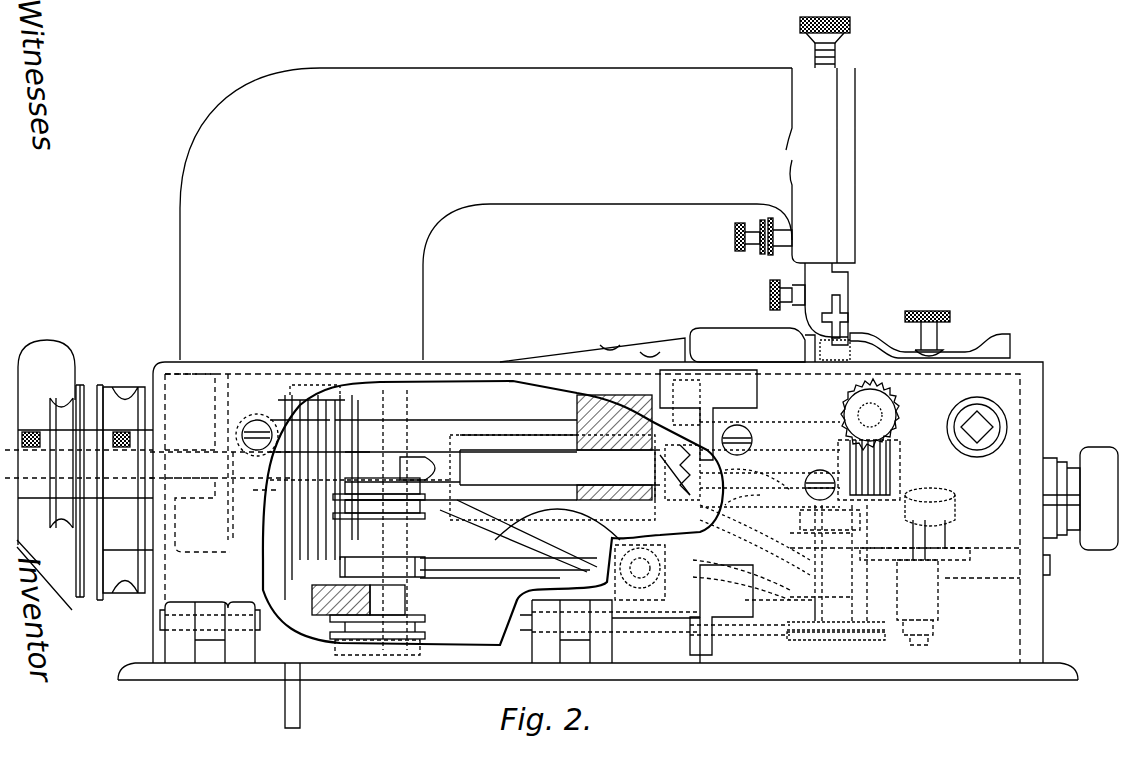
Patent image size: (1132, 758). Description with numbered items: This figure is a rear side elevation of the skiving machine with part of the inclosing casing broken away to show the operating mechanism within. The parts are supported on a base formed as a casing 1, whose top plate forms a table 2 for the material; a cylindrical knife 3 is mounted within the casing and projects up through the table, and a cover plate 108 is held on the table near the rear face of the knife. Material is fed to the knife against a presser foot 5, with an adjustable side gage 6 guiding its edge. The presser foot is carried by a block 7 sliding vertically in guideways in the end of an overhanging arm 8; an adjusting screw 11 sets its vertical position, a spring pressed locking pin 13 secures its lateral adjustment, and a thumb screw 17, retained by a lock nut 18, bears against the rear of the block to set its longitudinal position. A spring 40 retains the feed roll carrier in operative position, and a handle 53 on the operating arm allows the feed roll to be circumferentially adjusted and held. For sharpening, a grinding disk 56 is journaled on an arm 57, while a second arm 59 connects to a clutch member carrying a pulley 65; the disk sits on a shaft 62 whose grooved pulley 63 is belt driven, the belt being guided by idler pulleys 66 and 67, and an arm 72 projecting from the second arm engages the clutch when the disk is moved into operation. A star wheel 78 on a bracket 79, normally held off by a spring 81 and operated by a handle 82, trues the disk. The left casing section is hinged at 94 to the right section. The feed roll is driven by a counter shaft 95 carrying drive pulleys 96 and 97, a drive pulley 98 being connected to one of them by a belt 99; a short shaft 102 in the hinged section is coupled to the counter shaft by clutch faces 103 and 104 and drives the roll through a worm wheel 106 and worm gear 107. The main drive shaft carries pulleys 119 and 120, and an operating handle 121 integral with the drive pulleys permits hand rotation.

The casing 1 is at (455, 370).
The table 2 is at (655, 360).
The cylindrical knife 3 is at (790, 345).
The presser foot 5 is at (846, 325).
The adjustable side gage 6 is at (880, 340).
The block 7 is at (842, 286).
The overhanging arm 8 is at (660, 70).
The adjusting screw 11 is at (840, 64).
The spring pressed locking pin 13 is at (768, 294).
The thumb screw 17 is at (738, 250).
The lock nut 18 is at (758, 226).
The spring 40 is at (640, 580).
The handle 53 is at (1098, 458).
The grinding disk 56 is at (765, 495).
The arm 57 is at (468, 428).
The second arm 59 is at (408, 458).
The shaft 62 is at (812, 632).
The grooved pulley 63 is at (870, 640).
The pulley 65 is at (325, 395).
The idler pulley 66 is at (405, 525).
The idler pulley 67 is at (400, 640).
The arm 72 is at (540, 528).
The wheel 78 is at (950, 503).
The bracket 79 is at (950, 556).
The spring 81 is at (805, 505).
The handle 82 is at (995, 578).
The hinge 94 is at (725, 393).
The counter shaft 95 is at (530, 462).
The drive pulley 96 is at (80, 384).
The drive pulley 97 is at (65, 410).
The drive pulley 98 is at (126, 570).
The belt 99 is at (100, 384).
The short shaft 102 is at (778, 468).
The clutch face 103 is at (690, 495).
The clutch face 104 is at (655, 495).
The worm wheel 106 is at (895, 400).
The worm gear 107 is at (880, 480).
The cover plate 108 is at (585, 348).
The pulley 119 is at (280, 412).
The pulley 120 is at (130, 590).
The operating handle 121 is at (38, 348).